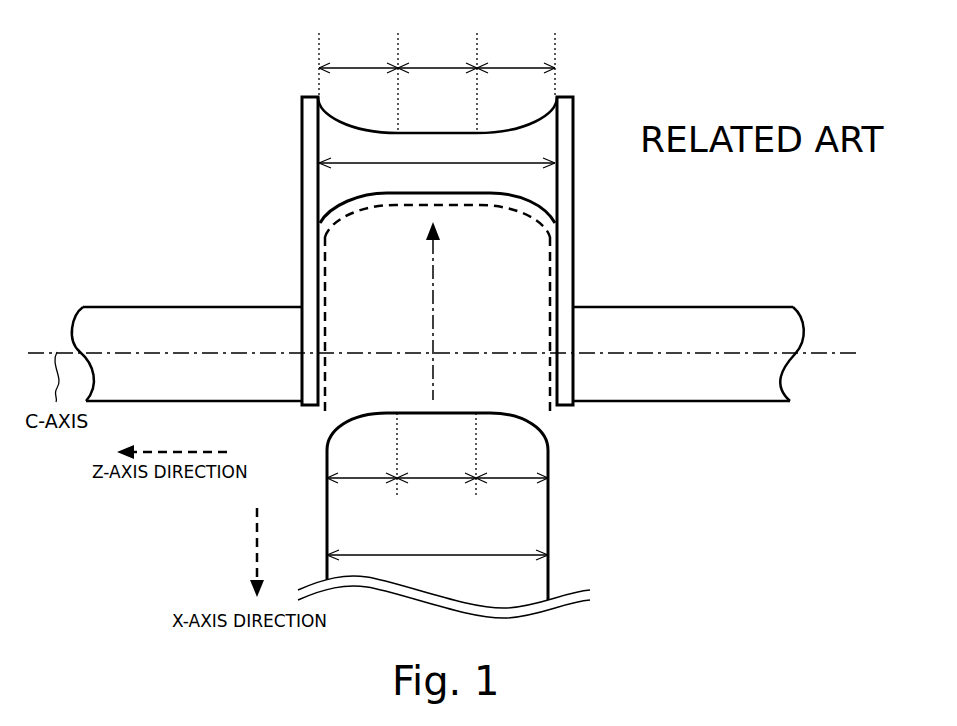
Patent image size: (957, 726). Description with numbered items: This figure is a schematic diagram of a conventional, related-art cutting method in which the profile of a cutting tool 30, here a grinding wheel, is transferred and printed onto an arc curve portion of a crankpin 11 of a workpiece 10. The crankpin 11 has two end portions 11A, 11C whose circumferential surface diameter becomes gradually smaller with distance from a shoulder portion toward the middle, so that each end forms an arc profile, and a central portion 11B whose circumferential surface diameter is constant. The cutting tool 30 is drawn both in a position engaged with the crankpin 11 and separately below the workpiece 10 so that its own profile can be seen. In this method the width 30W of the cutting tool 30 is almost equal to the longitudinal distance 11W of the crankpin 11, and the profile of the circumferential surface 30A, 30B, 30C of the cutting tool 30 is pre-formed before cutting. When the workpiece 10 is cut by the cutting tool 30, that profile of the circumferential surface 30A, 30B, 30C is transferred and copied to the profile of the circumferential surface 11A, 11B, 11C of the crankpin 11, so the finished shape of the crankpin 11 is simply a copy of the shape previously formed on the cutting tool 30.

The workpiece 10 is at (162, 270).
The crankpin 11 is at (343, 143).
The end portion 11A is at (358, 83).
The central portion 11B is at (437, 83).
The end portion 11C is at (516, 65).
The longitudinal distance 11W is at (437, 152).
The cutting tool 30 is at (327, 263).
The circumferential surface 30A is at (362, 455).
The circumferential surface 30B is at (436, 455).
The circumferential surface 30C is at (512, 464).
The width 30W is at (437, 543).